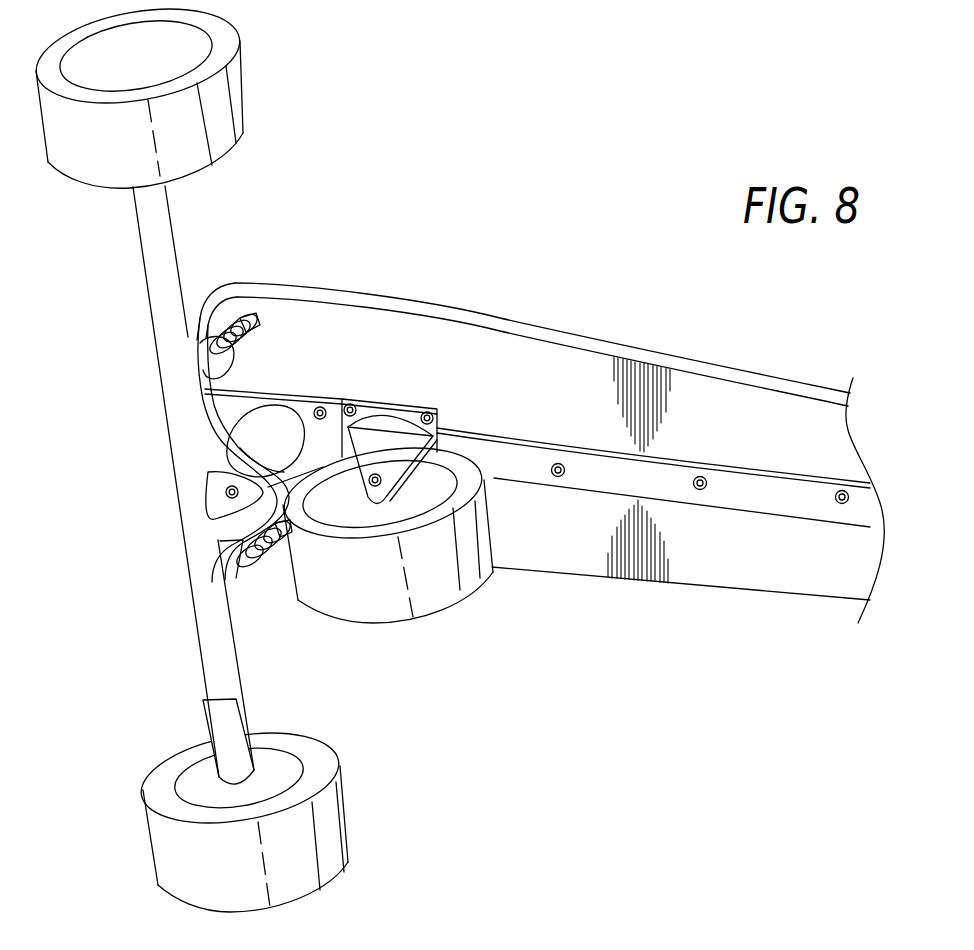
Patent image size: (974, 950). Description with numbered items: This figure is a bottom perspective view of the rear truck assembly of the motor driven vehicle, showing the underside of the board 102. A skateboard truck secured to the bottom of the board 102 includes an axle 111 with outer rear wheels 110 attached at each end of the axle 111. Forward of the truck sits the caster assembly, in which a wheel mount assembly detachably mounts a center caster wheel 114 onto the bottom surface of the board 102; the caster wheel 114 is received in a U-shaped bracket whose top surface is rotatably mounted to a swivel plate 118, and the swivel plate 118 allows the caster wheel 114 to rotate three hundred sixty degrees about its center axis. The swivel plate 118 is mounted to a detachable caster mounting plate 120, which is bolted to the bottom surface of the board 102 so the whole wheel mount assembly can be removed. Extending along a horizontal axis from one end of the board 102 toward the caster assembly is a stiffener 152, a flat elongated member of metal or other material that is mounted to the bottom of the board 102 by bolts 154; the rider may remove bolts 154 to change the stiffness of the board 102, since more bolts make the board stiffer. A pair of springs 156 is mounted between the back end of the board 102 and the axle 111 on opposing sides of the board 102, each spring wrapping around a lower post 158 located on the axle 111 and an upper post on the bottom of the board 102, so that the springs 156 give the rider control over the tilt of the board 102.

The board 102 is at (717, 370).
The outer rear wheels 110 is at (213, 95).
The axle 111 is at (162, 261).
The center caster wheel 114 is at (350, 579).
The swivel plate 118 is at (372, 412).
The caster mounting plate 120 is at (440, 430).
The stiffener 152 is at (525, 463).
The bolts 154 is at (842, 497).
The pair of springs 156 is at (230, 318).
The lower posts 158 is at (217, 365).